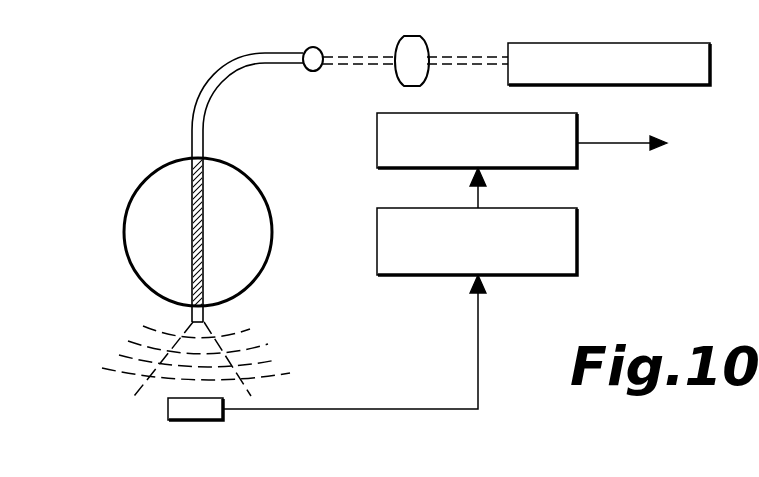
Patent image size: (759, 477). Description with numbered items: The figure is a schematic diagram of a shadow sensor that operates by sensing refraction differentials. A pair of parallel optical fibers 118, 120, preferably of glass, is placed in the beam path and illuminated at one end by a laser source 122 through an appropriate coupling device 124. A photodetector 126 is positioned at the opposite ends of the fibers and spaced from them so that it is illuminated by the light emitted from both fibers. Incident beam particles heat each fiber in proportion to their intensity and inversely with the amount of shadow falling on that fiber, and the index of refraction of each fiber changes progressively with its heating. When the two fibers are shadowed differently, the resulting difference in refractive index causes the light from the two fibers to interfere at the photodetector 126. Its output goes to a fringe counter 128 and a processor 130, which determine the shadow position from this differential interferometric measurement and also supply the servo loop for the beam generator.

The optical fiber 118 is at (192, 135).
The optical fiber 120 is at (203, 135).
The laser source 122 is at (692, 88).
The coupling device 124 is at (422, 40).
The photodetector 126 is at (168, 409).
The fringe counter 128 is at (577, 240).
The processor 130 is at (577, 162).